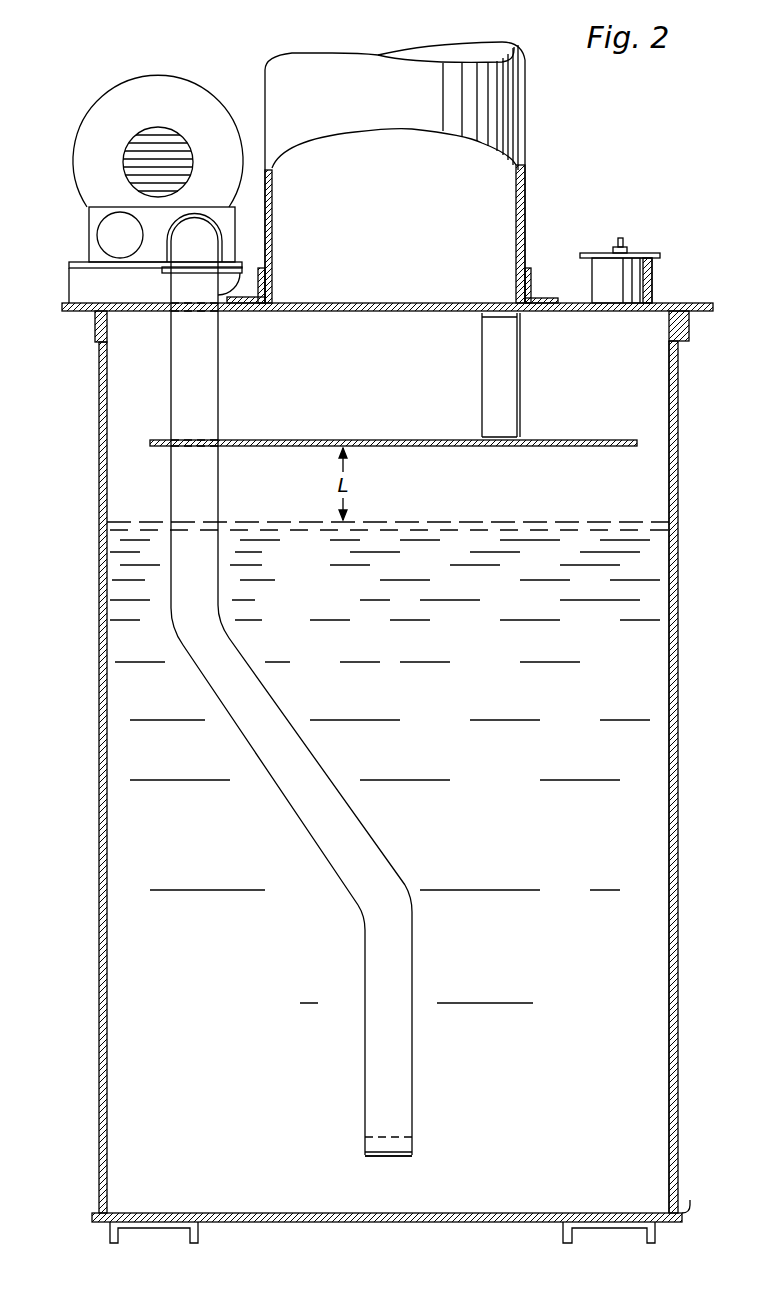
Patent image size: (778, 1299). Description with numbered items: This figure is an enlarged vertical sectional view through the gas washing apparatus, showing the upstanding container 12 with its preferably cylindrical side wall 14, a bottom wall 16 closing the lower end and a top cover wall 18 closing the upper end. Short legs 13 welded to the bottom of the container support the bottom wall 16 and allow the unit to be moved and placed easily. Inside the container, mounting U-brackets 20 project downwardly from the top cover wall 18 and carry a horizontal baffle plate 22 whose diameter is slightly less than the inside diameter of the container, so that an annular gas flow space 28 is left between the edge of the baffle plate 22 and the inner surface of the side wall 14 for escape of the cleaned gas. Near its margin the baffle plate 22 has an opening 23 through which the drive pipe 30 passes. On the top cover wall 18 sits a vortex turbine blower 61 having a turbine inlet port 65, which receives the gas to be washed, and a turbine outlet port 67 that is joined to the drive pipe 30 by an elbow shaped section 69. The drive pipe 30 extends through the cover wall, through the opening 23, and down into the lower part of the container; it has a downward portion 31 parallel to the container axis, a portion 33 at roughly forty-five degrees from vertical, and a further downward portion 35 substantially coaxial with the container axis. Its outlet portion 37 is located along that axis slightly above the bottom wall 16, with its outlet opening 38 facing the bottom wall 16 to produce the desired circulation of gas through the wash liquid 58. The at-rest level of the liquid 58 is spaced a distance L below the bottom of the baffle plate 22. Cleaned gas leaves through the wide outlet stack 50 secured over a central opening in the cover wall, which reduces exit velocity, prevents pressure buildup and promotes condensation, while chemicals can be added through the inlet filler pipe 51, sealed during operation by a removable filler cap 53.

The container 12 is at (372, 797).
The legs 13 is at (110, 1235).
The side wall 14 is at (100, 1074).
The bottom wall 16 is at (275, 1224).
The top cover wall 18 is at (695, 305).
The mounting U-brackets 20 is at (527, 410).
The baffle plate 22 is at (598, 447).
The opening 23 is at (166, 440).
The annular gas flow space 28 is at (130, 438).
The drive pipe 30 is at (152, 520).
The downward portion 31 is at (175, 375).
The angled portion 33 is at (204, 683).
The further downward portion 35 is at (365, 1003).
The outlet portion 37 is at (395, 1147).
The outlet opening 38 is at (378, 1157).
The outlet stack 50 is at (530, 194).
The inlet filler pipe 51 is at (650, 282).
The filler cap 53 is at (640, 253).
The liquid 58 is at (648, 1050).
The vortex turbine blower 61 is at (87, 122).
The turbine inlet port 65 is at (88, 240).
The turbine outlet port 67 is at (227, 216).
The elbow shaped section 69 is at (218, 258).